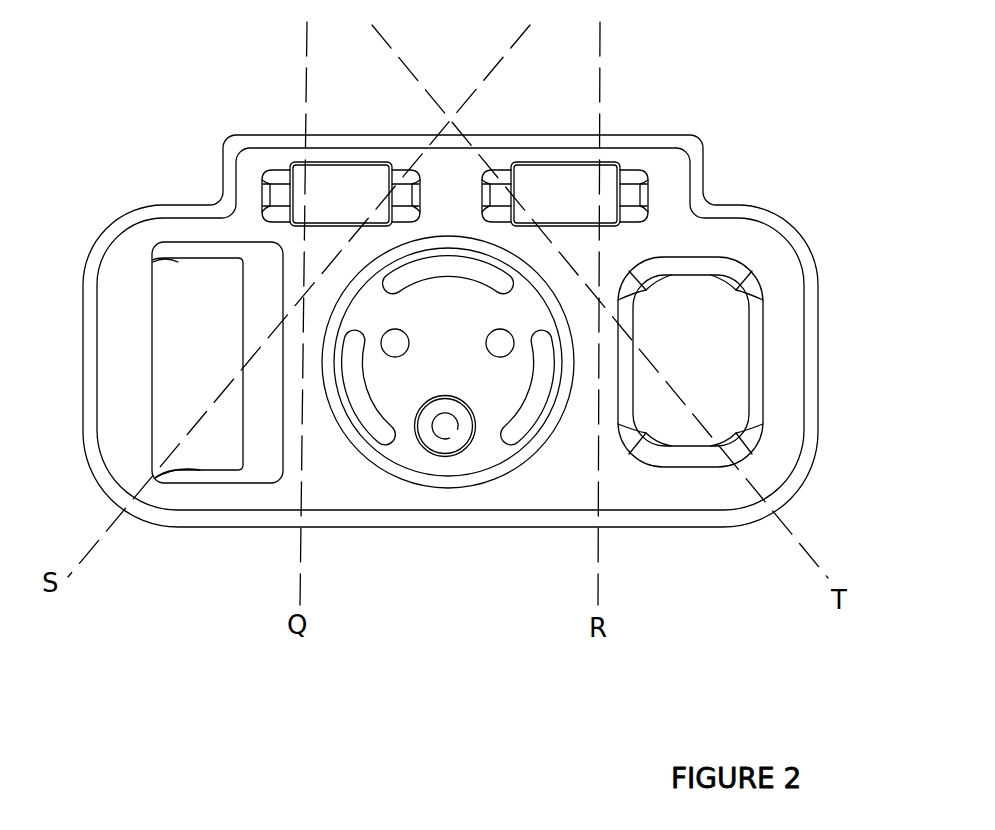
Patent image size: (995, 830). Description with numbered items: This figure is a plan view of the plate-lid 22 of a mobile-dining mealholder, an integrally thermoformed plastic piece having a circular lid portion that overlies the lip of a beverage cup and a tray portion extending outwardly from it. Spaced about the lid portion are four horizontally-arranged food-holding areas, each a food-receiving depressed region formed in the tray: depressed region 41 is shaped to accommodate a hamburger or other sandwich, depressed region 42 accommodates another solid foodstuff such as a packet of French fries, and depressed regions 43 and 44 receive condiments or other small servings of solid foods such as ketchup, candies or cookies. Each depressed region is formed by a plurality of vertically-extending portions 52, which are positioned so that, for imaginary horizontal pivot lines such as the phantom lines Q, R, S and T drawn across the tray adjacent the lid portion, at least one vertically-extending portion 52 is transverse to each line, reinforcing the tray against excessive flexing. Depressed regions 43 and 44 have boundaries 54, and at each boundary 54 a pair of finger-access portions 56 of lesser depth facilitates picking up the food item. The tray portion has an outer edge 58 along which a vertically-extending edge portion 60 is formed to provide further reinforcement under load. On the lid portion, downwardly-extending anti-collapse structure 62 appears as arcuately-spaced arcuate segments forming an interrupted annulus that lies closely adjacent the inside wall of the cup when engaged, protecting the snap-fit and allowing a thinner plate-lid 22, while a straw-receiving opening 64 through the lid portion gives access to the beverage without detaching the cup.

The plate-lid 22 is at (752, 108).
The food-receiving depressed region 41 is at (195, 288).
The food-receiving depressed region 42 is at (706, 318).
The food-receiving depressed region 43 is at (347, 193).
The food-receiving depressed region 44 is at (563, 192).
The vertically-extending portions 52 is at (332, 170).
The boundaries 54 is at (283, 160).
The finger-access portions 56 is at (280, 195).
The outer edge 58 is at (364, 527).
The vertically-extending edge portion 60 is at (807, 343).
The anti-collapse structure 62 is at (437, 284).
The straw-receiving opening 64 is at (456, 433).